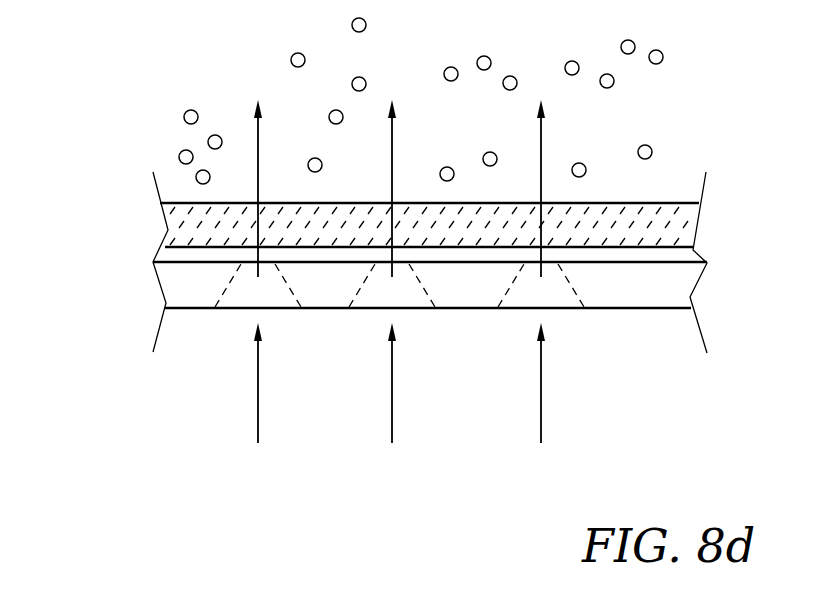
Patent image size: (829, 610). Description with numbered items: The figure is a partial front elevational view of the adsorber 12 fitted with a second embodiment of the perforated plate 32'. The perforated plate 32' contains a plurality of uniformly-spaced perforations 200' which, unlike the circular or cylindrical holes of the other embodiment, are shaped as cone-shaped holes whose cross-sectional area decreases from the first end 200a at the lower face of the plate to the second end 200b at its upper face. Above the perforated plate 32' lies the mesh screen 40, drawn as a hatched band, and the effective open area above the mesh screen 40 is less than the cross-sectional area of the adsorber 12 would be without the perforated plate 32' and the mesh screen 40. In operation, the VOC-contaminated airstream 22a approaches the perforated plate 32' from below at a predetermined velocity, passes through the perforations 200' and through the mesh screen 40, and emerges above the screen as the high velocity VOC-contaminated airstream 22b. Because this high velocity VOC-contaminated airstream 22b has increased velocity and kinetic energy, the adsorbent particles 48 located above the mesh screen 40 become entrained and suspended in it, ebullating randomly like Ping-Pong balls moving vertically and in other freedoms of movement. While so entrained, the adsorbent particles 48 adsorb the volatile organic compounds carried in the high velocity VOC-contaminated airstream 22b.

The adsorber 12 is at (140, 52).
The adsorbent particles 48 is at (191, 110).
The high velocity VOC-contaminated airstream 22b is at (258, 138).
The mesh screen 40 is at (623, 225).
The second end 200b is at (247, 268).
The first end 200a is at (242, 308).
The perforations 200' is at (423, 303).
The perforated plate 32' is at (399, 332).
The VOC-contaminated airstream 22a is at (258, 418).